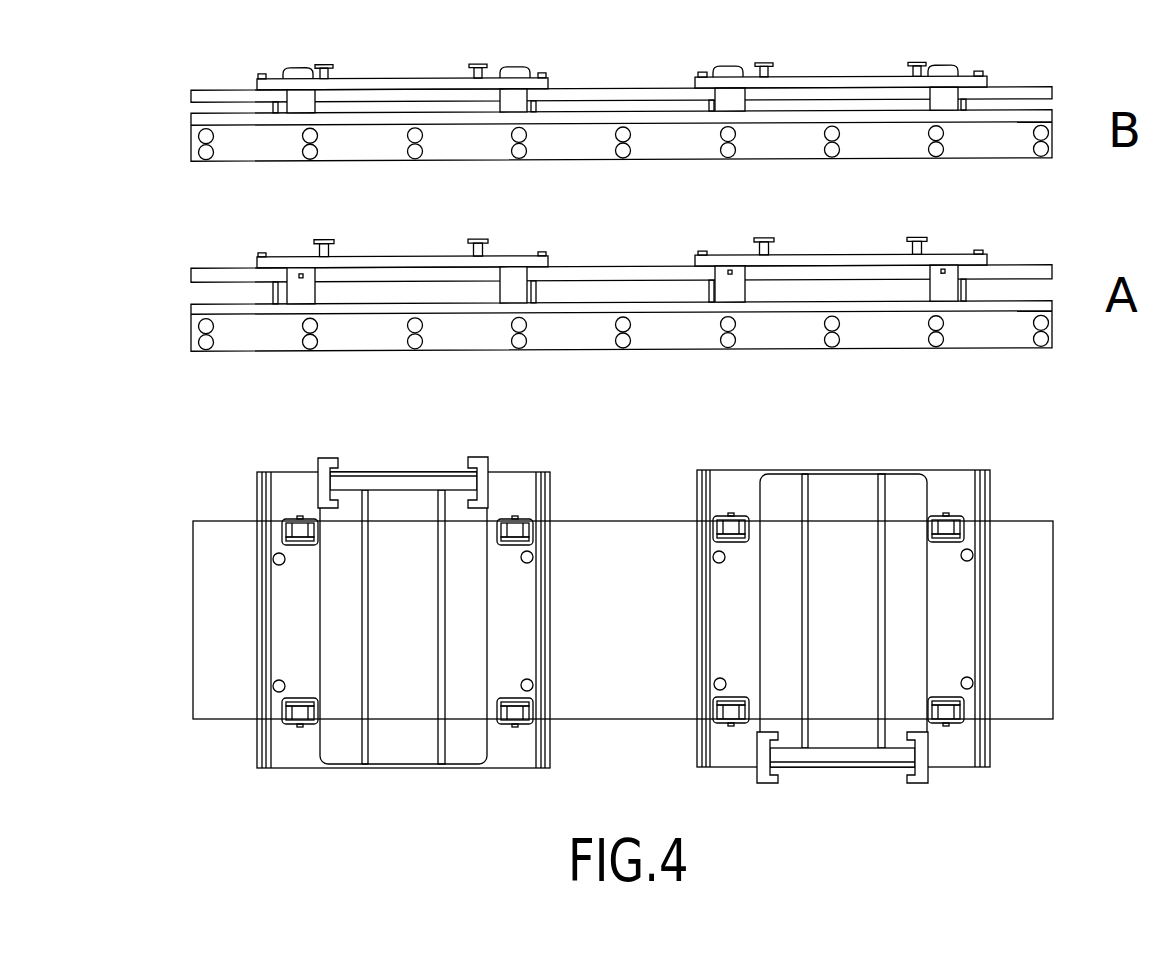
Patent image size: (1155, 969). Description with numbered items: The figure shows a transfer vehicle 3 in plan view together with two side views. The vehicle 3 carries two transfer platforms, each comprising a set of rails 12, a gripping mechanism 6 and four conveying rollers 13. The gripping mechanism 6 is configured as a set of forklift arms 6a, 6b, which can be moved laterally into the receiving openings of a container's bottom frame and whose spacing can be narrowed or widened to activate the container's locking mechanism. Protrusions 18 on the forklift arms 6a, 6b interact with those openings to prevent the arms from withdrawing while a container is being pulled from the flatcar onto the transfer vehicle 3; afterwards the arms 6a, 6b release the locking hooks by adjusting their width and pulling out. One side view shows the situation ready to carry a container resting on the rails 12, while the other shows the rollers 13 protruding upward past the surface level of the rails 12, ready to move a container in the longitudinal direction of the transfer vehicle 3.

The transfer vehicle 3 is at (222, 573).
The gripping mechanism 6 is at (412, 478).
The forklift arm 6a is at (325, 495).
The forklift arm 6b is at (477, 468).
The rails 12 is at (263, 78).
The conveying rollers 13 is at (300, 70).
The protrusions 18 is at (335, 458).